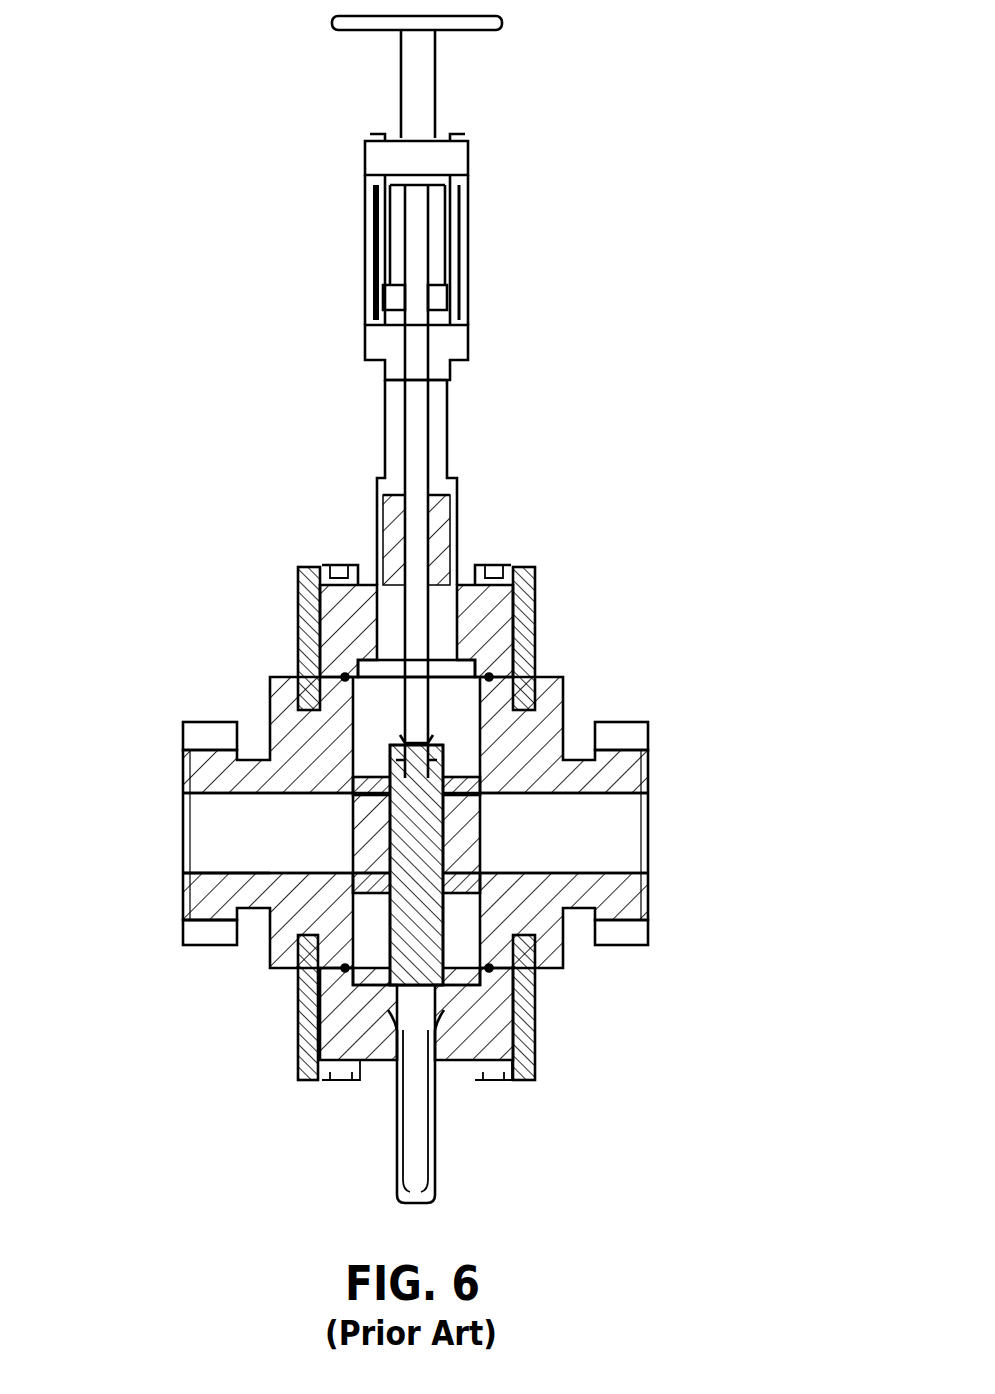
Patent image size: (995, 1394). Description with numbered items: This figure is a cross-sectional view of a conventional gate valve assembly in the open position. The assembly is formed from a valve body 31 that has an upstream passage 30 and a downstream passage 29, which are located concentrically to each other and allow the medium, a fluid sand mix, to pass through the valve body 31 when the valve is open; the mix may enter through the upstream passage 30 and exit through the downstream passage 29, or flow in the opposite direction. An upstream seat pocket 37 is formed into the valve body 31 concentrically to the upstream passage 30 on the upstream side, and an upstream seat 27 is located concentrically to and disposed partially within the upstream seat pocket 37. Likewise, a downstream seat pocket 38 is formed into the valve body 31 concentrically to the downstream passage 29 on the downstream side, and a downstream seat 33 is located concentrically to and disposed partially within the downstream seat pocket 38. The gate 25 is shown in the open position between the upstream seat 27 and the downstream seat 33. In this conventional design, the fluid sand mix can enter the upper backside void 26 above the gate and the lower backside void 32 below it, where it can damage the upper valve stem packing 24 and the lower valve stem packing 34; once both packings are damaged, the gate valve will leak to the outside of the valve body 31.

The upper valve stem packing 24 is at (330, 565).
The gate 25 is at (410, 803).
The upper backside void 26 is at (385, 688).
The upstream seat 27 is at (372, 815).
The downstream passage 29 is at (617, 818).
The upstream passage 30 is at (216, 828).
The valve body 31 is at (203, 898).
The lower backside void 32 is at (373, 923).
The downstream seat 33 is at (467, 888).
The lower valve stem packing 34 is at (433, 1026).
The upstream seat pocket 37 is at (347, 877).
The downstream seat pocket 38 is at (483, 777).